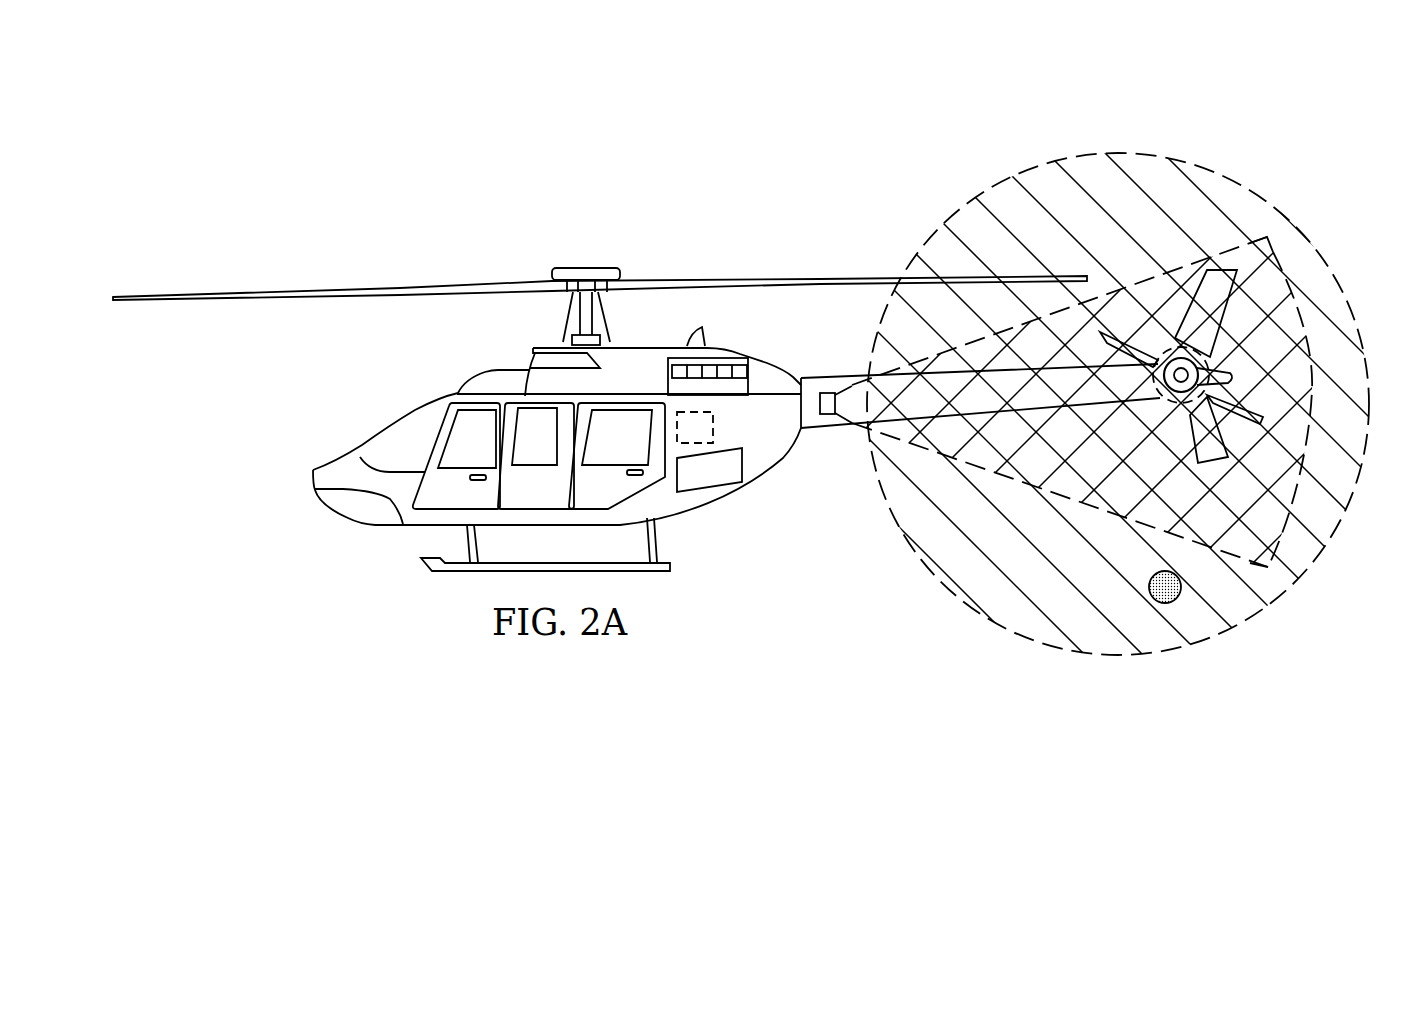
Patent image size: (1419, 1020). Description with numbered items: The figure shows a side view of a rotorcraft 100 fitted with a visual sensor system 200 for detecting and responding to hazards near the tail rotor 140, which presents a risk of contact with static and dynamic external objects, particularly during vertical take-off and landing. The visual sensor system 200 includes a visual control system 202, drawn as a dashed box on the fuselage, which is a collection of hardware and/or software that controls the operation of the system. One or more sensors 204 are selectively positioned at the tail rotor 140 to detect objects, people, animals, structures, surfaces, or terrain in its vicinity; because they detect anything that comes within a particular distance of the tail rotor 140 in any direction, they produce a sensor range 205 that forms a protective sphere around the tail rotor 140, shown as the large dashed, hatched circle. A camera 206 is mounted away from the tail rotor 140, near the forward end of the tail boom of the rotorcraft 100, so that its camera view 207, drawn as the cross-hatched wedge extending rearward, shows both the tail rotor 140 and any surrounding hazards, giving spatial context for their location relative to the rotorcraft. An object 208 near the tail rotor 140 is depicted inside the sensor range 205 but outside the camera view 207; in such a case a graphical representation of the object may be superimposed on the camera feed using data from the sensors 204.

The rotorcraft 100 is at (386, 420).
The tail rotor 140 is at (1162, 333).
The visual sensor system 200 is at (353, 218).
The visual control system 202 is at (715, 428).
The sensors 204 is at (1182, 406).
The sensor range 205 is at (1192, 162).
The camera 206 is at (823, 390).
The camera view 207 is at (1020, 480).
The object 208 is at (1178, 605).